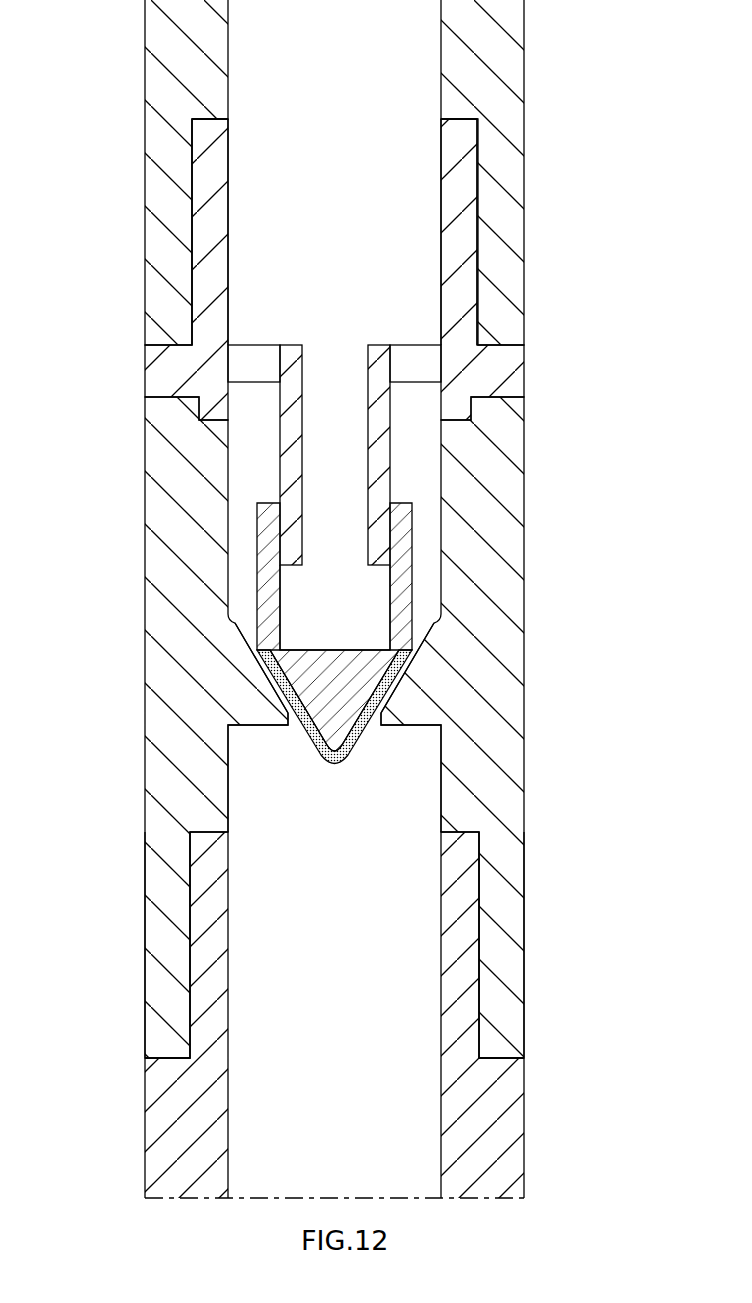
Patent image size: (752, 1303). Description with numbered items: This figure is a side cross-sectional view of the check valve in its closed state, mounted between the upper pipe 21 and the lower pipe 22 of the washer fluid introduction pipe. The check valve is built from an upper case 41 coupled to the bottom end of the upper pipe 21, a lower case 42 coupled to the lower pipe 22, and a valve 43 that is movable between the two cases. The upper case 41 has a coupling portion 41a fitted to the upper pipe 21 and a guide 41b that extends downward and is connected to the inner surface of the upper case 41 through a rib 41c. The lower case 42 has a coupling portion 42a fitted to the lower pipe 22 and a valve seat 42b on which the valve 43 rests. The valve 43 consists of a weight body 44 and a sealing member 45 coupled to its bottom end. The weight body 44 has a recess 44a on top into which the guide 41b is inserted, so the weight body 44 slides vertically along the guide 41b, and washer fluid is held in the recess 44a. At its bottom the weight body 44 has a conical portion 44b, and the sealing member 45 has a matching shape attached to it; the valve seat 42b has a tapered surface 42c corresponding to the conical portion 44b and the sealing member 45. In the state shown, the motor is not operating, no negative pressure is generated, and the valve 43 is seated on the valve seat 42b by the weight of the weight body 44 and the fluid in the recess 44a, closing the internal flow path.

The upper pipe 21 is at (510, 233).
The lower pipe 22 is at (512, 1107).
The upper case 41 is at (336, 342).
The coupling portion 41a is at (458, 297).
The guide 41b is at (377, 455).
The rib 41c is at (258, 343).
The lower case 42 is at (385, 727).
The coupling portion 42a is at (507, 890).
The valve seat 42b is at (403, 715).
The tapered surface 42c is at (398, 676).
The valve 43 is at (216, 662).
The weight body 44 is at (239, 662).
The recess 44a is at (353, 612).
The conical portion 44b is at (333, 726).
The sealing member 45 is at (275, 680).